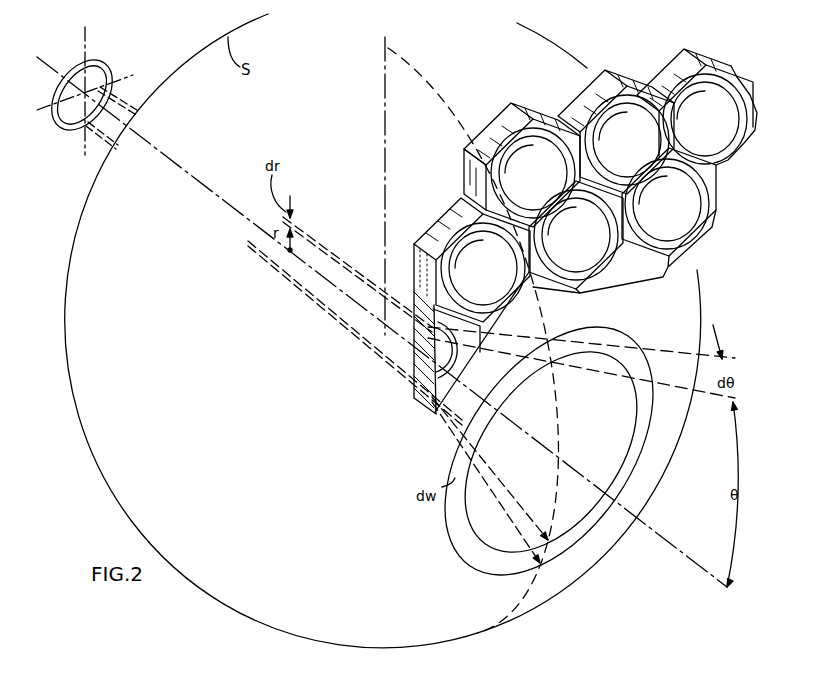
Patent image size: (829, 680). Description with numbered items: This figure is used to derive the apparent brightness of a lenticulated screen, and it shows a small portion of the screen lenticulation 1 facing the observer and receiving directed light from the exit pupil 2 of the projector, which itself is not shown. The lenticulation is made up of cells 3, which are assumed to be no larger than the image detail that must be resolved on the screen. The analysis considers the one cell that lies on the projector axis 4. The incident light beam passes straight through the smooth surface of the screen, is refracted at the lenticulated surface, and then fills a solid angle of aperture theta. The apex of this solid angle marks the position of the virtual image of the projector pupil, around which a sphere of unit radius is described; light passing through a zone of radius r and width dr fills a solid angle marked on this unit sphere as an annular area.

The screen lenticulation 1 is at (655, 59).
The exit pupil 2 is at (105, 56).
The cells 3 is at (548, 120).
The projector axis 4 is at (312, 265).